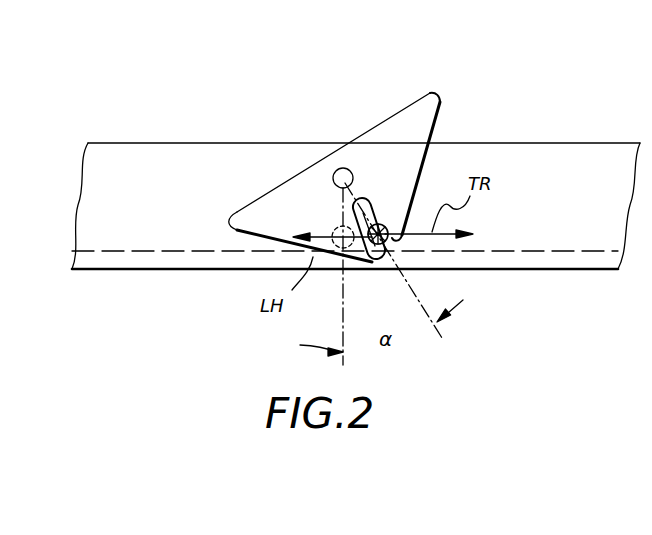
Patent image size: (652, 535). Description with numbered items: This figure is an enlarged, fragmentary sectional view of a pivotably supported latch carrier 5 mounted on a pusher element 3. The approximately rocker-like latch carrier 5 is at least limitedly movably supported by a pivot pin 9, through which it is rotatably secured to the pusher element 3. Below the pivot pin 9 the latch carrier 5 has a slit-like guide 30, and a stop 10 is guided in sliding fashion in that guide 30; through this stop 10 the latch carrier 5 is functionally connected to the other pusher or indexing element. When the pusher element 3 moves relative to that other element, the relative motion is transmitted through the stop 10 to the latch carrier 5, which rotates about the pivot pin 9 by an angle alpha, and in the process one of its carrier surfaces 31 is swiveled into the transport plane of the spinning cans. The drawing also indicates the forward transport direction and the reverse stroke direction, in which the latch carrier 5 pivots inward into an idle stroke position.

The pusher element 3 is at (161, 160).
The latch carrier 5 is at (338, 166).
The pivot pin 9 is at (343, 167).
The stop 10 is at (373, 262).
The slit-like guide 30 is at (372, 203).
The carrier surface 31 is at (441, 100).